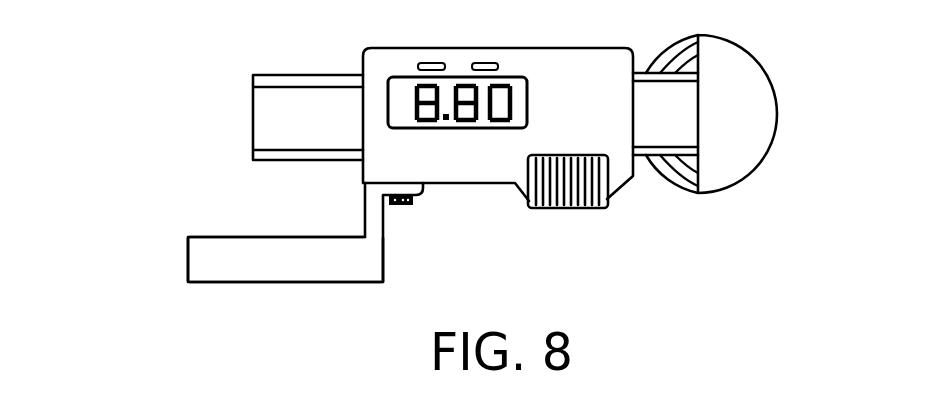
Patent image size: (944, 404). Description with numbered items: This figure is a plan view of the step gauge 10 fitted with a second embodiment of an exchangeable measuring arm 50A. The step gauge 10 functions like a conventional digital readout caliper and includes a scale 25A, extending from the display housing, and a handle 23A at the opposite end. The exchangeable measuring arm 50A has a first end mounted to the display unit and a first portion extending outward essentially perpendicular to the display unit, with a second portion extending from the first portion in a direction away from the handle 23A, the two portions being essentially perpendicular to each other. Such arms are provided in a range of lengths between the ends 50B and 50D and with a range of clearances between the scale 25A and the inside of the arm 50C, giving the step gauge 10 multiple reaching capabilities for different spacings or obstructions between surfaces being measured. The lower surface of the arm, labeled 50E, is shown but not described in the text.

The step gauge 10 is at (642, 241).
The scale 25A is at (278, 113).
The handle 23A is at (733, 160).
The exchangeable measuring arm 50A is at (223, 268).
The end of measuring arm 50B is at (188, 260).
The inside of the arm 50C is at (223, 235).
The end of measuring arm 50D is at (383, 263).
The bracket lower surface 50E is at (257, 282).